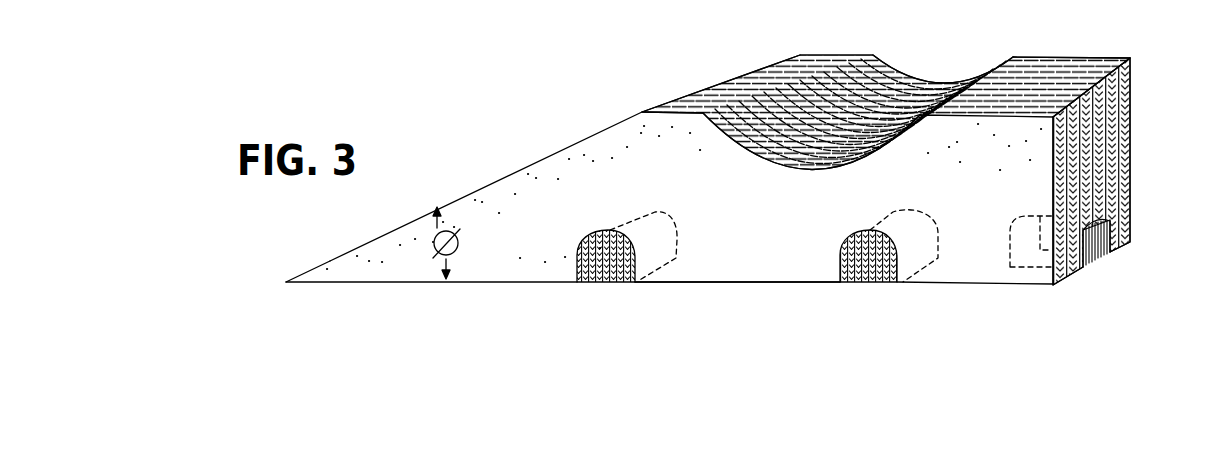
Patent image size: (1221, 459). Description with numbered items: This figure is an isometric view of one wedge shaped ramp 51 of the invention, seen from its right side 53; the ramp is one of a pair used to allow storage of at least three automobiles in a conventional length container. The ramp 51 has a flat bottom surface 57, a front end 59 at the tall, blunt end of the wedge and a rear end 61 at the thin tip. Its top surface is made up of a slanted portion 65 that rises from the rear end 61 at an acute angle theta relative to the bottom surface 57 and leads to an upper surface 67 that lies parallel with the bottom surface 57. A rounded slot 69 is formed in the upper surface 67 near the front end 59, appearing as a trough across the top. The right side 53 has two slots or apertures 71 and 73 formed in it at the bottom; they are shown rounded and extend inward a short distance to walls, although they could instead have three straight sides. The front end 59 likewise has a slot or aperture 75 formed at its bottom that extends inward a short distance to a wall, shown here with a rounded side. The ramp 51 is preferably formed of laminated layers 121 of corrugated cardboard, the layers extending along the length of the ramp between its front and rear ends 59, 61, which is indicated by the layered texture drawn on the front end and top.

The wedge shaped ramp 51 is at (1153, 143).
The right side 53 is at (523, 188).
The bottom surface 57 is at (760, 283).
The front end 59 is at (1130, 197).
The rear end 61 is at (283, 290).
The slanted portion 65 is at (598, 128).
The upper surface 67 is at (853, 62).
The rounded slot 69 is at (910, 80).
The slot 71 is at (882, 277).
The slot 73 is at (612, 280).
The slot 75 is at (1095, 260).
The laminated layers 121 is at (1108, 62).